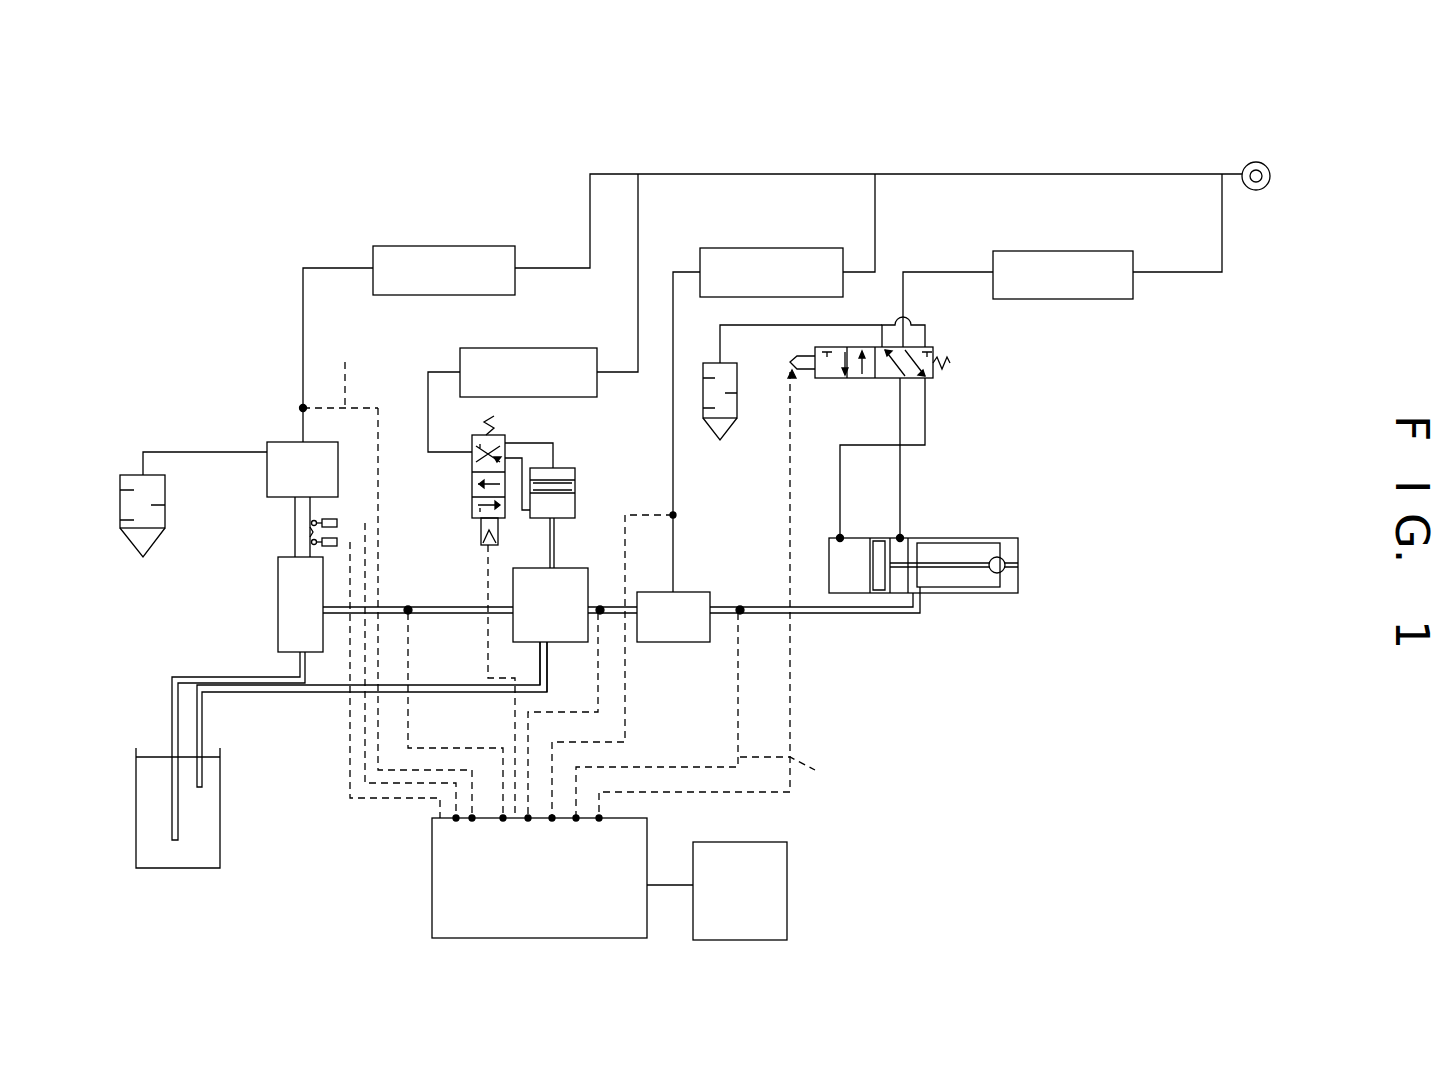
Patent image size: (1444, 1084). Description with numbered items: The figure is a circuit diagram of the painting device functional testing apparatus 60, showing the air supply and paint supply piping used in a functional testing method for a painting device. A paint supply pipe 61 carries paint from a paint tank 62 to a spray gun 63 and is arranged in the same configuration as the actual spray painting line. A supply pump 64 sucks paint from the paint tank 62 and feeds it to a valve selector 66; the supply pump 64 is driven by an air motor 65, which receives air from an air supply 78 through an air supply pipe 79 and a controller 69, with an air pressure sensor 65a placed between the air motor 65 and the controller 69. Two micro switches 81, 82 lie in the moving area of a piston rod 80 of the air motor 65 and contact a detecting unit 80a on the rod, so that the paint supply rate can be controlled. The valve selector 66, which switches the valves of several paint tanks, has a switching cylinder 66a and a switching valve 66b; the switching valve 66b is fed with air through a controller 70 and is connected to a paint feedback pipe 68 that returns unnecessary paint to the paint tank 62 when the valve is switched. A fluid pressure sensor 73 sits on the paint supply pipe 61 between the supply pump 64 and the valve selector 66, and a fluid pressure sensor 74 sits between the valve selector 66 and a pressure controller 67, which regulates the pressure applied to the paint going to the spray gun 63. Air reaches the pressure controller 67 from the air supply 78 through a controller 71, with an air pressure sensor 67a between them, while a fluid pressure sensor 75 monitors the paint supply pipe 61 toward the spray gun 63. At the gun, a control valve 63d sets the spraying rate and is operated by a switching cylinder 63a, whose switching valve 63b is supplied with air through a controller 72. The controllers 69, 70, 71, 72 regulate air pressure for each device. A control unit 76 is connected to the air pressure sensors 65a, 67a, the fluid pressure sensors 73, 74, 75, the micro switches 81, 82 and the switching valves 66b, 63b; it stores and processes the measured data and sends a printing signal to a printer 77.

The painting device functional testing apparatus 60 is at (816, 714).
The paint supply pipe 61 is at (172, 677).
The paint tank 62 is at (198, 803).
The spray gun 63 is at (975, 548).
The switching cylinder 63a is at (900, 538).
The switching valve 63b is at (950, 363).
The control valve 63d is at (1005, 565).
The supply pump 64 is at (287, 578).
The air motor 65 is at (277, 452).
The air pressure sensor 65a is at (303, 408).
The valve selector 66 is at (565, 578).
The switching cylinder 66a is at (575, 470).
The switching valve 66b is at (505, 443).
The pressure controller 67 is at (690, 595).
The air pressure sensor 67a is at (673, 515).
The paint feedback pipe 68 is at (547, 667).
The controller 69 is at (409, 344).
The controller 70 is at (512, 400).
The controller 71 is at (756, 420).
The controller 72 is at (1018, 299).
The fluid pressure sensor 73 is at (408, 606).
The fluid pressure sensor 74 is at (600, 606).
The fluid pressure sensor 75 is at (740, 606).
The control unit 76 is at (573, 634).
The printer 77 is at (717, 891).
The air supply 78 is at (1254, 162).
The air supply pipe 79 is at (780, 174).
The piston rod 80 is at (295, 525).
The detecting unit 80a is at (313, 532).
The micro switch 81 is at (337, 520).
The micro switch 82 is at (337, 540).